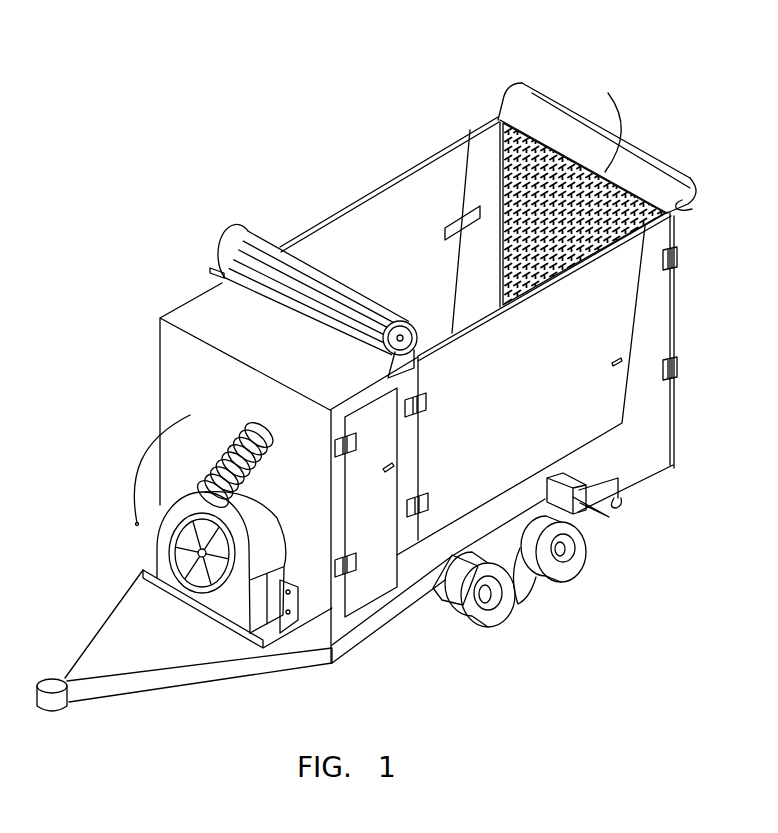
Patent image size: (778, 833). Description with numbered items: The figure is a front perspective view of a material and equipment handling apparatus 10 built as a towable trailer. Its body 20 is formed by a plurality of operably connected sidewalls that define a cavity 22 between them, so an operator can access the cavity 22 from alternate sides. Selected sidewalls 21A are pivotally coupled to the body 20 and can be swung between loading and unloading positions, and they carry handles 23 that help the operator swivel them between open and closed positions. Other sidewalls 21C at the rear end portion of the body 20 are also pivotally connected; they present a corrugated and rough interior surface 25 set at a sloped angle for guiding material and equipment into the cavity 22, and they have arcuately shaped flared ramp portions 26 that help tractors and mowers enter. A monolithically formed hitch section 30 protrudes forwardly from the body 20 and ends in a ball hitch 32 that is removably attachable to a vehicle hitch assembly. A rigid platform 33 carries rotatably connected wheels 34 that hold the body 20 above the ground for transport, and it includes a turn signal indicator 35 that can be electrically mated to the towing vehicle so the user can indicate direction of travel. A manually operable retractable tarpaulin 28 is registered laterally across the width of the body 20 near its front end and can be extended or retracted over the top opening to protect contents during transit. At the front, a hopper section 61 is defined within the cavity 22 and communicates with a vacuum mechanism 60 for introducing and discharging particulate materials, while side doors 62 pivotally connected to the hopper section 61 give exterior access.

The apparatus 10 is at (95, 118).
The body 20 is at (325, 210).
The selected sidewalls 21A is at (397, 182).
The other sidewalls 21C is at (535, 133).
The cavity 22 is at (485, 173).
The handles 23 is at (616, 368).
The corrugated and rough interior surface 25 is at (542, 193).
The flared ramp portions 26 is at (572, 105).
The retractable tarpaulin 28 is at (248, 246).
The hitch section 30 is at (90, 712).
The ball hitch 32 is at (50, 677).
The rigid platform 33 is at (383, 627).
The wheels 34 is at (500, 608).
The turn signal indicator 35 is at (580, 503).
The vacuum mechanism 60 is at (182, 487).
The hopper section 61 is at (190, 320).
The side doors 62 is at (362, 530).